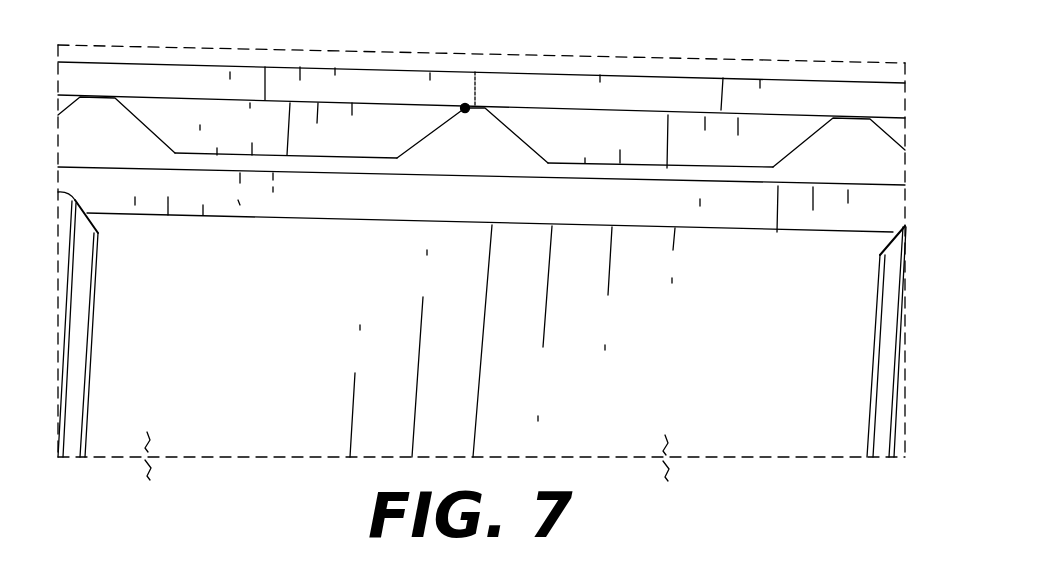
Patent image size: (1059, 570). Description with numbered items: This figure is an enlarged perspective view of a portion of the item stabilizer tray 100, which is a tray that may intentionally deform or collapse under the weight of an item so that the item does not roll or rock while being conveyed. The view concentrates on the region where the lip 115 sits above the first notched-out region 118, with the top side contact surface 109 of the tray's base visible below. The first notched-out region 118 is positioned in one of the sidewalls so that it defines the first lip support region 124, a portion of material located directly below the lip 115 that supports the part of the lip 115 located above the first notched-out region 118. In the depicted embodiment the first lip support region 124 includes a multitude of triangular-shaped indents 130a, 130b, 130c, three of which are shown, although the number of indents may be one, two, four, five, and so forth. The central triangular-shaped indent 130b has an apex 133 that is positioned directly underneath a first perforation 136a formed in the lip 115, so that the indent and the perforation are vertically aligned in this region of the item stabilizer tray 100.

The item stabilizer tray 100 is at (880, 467).
The top side contact surface 109 is at (281, 351).
The lip 115 is at (146, 93).
The first notched-out region 118 is at (839, 178).
The first lip support region 124 is at (601, 146).
The triangular-shaped indent 130a is at (112, 136).
The central triangular-shaped indent 130b is at (480, 143).
The triangular-shaped indent 130c is at (870, 151).
The apex 133 is at (463, 106).
The first perforation 136a is at (477, 88).